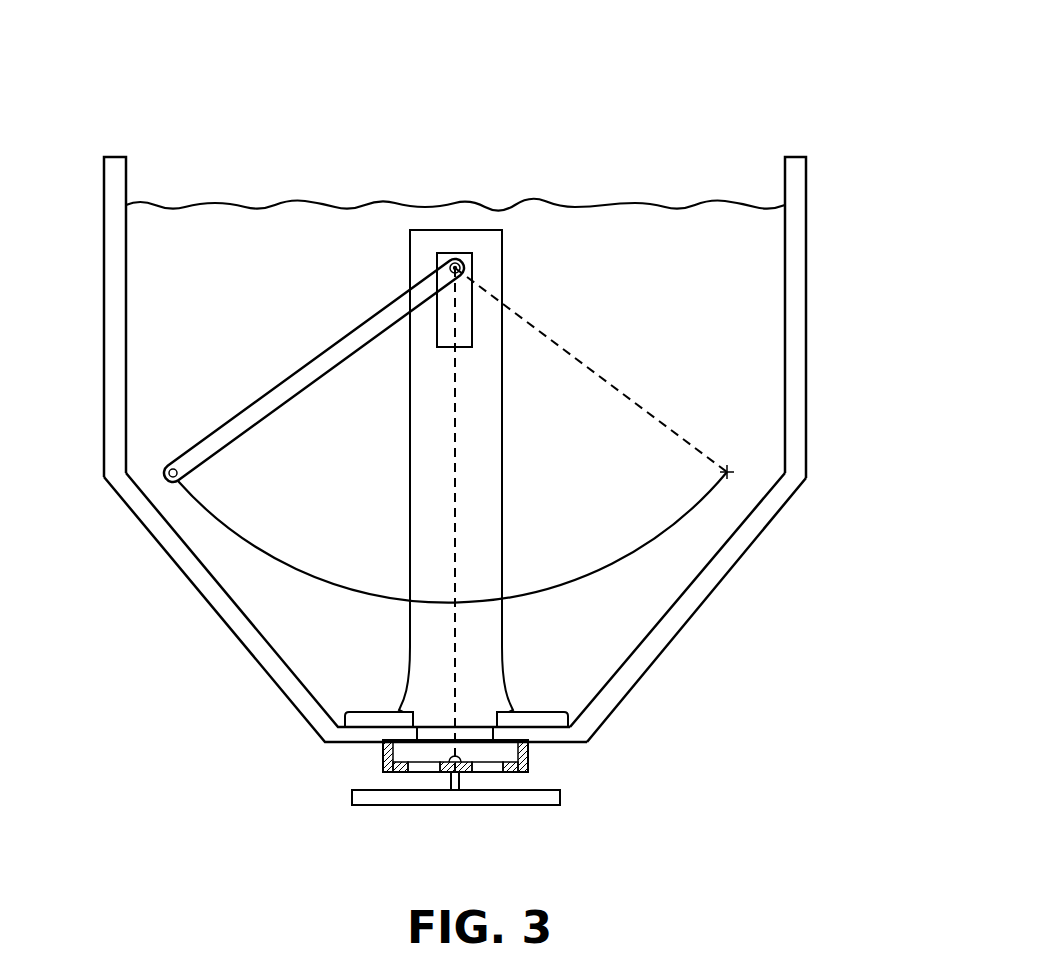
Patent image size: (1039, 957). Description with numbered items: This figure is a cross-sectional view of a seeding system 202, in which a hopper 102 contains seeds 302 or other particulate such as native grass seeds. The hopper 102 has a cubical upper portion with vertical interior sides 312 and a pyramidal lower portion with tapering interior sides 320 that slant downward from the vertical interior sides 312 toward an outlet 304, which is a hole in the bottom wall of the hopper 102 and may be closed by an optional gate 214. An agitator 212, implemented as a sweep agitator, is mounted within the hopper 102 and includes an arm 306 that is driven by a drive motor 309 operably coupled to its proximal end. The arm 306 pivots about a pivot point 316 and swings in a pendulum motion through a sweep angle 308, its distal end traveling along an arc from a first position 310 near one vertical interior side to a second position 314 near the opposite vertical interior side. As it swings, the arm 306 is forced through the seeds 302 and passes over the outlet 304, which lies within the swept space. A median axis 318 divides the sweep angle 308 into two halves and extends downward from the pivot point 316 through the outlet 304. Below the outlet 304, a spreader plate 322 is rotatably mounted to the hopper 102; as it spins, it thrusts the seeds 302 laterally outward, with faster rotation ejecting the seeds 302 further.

The hopper 102 is at (806, 170).
The seeding system 202 is at (622, 58).
The agitator 212 is at (507, 268).
The gate 214 is at (400, 785).
The seeds 302 is at (229, 212).
The outlet 304 is at (418, 740).
The arm 306 is at (230, 421).
The sweep angle 308 is at (683, 521).
The drive motor 309 is at (451, 263).
The first position 310 is at (734, 470).
The vertical interior sides 312 is at (127, 315).
The second position 314 is at (168, 468).
The pivot point 316 is at (463, 253).
The median axis 318 is at (455, 548).
The tapering interior sides 320 is at (642, 620).
The spreader plate 322 is at (538, 800).